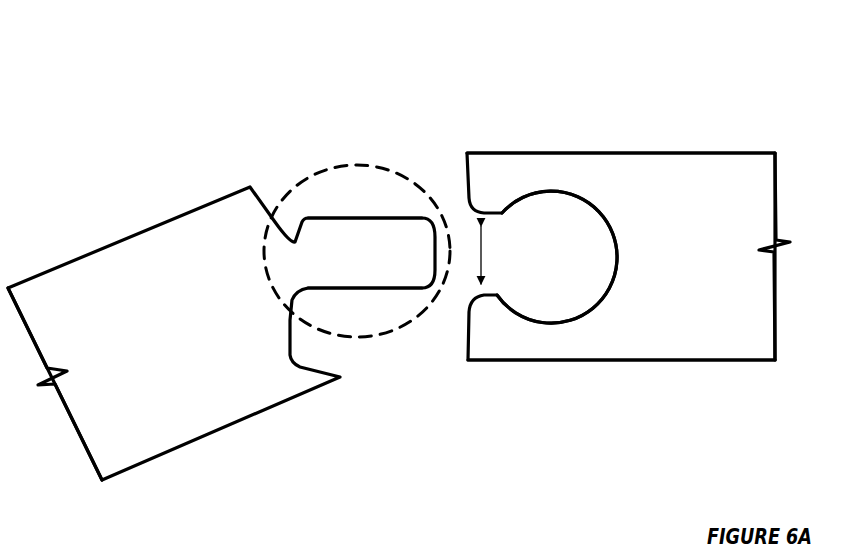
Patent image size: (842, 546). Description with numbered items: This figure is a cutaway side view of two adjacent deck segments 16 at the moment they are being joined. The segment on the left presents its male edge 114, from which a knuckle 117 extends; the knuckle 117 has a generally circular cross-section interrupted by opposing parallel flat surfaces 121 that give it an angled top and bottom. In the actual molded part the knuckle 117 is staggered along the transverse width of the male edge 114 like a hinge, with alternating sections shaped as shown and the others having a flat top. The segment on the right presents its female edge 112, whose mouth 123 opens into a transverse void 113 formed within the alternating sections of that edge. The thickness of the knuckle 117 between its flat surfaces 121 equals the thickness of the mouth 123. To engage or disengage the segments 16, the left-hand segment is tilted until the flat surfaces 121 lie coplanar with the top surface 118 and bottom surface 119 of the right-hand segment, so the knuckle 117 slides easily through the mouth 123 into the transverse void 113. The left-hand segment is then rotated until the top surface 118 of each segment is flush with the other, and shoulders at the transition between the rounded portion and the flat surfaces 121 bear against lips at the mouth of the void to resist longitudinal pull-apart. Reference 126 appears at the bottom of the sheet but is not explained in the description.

The deck segment 16 is at (68, 220).
The female edge 112 is at (459, 126).
The transverse void 113 is at (537, 252).
The male edge 114 is at (258, 126).
The knuckle 117 is at (377, 337).
The top surface 118 is at (758, 152).
The bottom surface 119 is at (520, 360).
The flat surfaces 121 is at (381, 294).
The mouth 123 is at (493, 250).
The reference numeral 126 is at (432, 539).